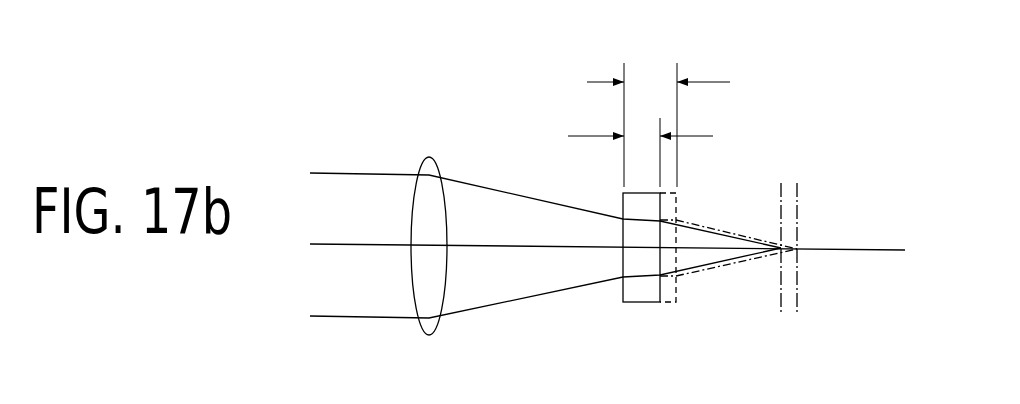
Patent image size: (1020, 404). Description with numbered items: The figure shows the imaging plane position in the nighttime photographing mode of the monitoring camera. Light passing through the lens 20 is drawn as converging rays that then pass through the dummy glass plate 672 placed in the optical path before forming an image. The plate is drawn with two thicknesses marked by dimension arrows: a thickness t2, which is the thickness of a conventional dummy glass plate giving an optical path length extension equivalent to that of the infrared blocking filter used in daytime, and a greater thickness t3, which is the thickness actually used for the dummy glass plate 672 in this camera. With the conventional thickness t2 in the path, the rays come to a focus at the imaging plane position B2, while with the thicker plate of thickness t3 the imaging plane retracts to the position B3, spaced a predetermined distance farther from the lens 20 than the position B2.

The lens 20 is at (423, 167).
The dummy glass plate 672 is at (642, 292).
The thickness t2 is at (640, 144).
The thickness t3 is at (656, 114).
The imaging plane position B2 is at (778, 197).
The imaging plane position B3 is at (802, 197).